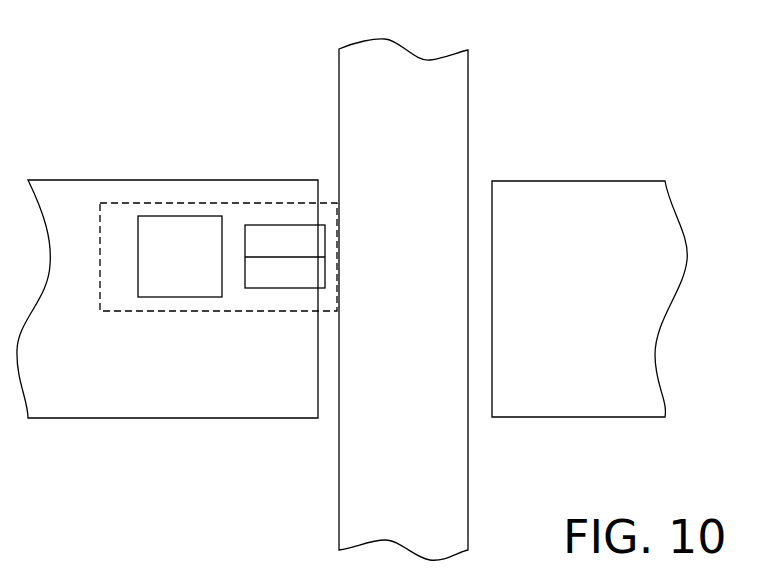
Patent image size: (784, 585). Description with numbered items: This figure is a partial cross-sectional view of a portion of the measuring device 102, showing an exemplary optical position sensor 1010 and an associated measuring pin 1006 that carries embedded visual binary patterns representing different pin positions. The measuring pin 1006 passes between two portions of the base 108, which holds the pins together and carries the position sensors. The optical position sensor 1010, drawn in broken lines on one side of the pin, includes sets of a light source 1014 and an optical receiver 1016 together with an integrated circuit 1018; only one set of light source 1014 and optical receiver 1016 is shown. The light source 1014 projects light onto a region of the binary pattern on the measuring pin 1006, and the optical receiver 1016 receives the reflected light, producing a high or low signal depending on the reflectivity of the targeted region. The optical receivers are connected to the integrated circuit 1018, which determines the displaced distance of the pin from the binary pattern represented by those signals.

The measuring device 102 is at (670, 50).
The base 108 is at (66, 180).
The measuring pin 1006 is at (468, 77).
The optical position sensor 1010 is at (188, 203).
The light source 1014 is at (270, 225).
The optical receiver 1016 is at (289, 288).
The integrated circuit 1018 is at (157, 297).